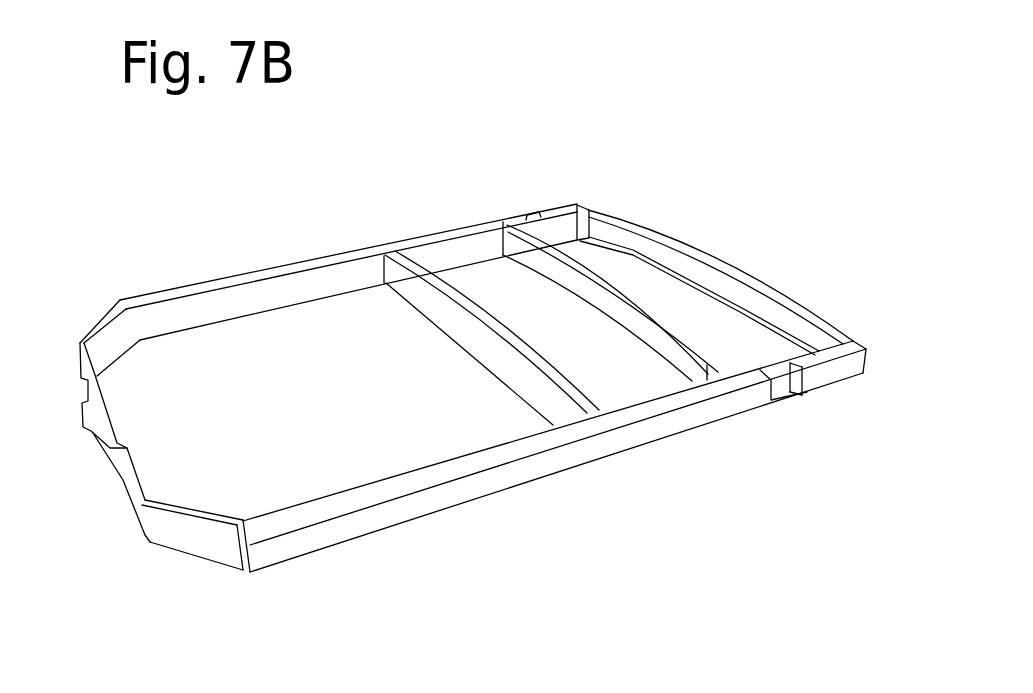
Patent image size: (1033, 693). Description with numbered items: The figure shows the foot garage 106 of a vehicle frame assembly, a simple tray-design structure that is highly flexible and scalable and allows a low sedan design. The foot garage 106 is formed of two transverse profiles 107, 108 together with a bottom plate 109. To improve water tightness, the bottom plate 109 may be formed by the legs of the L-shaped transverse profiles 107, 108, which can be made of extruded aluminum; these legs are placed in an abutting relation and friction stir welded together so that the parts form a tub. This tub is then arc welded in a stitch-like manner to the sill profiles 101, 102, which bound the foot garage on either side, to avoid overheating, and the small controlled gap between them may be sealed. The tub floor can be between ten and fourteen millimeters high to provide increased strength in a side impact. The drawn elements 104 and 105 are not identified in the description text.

The transverse profile 101 is at (314, 268).
The transverse profile 102 is at (427, 485).
The left end wall 104 is at (190, 543).
The right side rail 105 is at (731, 292).
The foot garage 106 is at (477, 277).
The transverse profile 107 is at (708, 363).
The transverse profile 108 is at (452, 324).
The bottom plate 109 is at (537, 355).